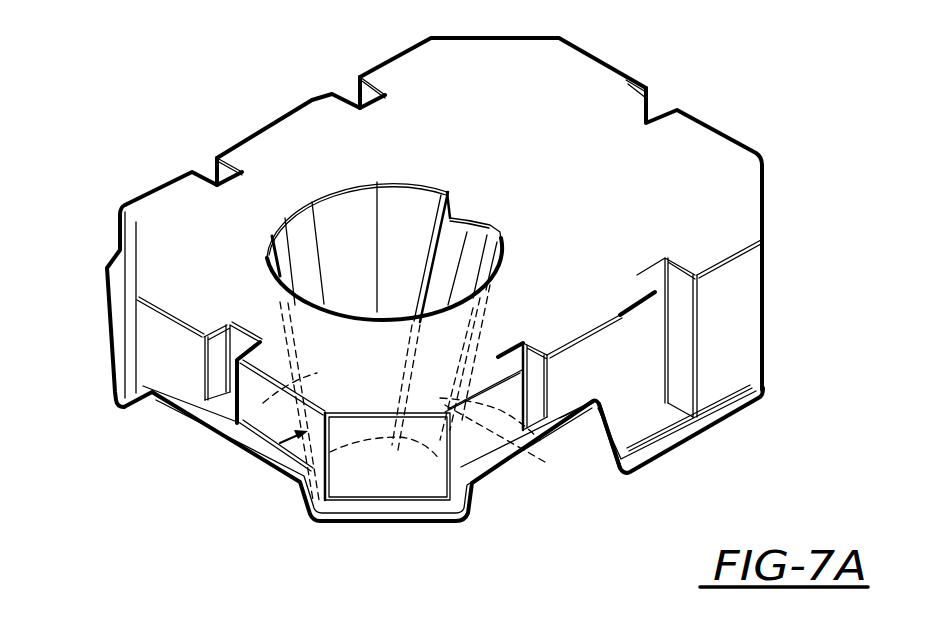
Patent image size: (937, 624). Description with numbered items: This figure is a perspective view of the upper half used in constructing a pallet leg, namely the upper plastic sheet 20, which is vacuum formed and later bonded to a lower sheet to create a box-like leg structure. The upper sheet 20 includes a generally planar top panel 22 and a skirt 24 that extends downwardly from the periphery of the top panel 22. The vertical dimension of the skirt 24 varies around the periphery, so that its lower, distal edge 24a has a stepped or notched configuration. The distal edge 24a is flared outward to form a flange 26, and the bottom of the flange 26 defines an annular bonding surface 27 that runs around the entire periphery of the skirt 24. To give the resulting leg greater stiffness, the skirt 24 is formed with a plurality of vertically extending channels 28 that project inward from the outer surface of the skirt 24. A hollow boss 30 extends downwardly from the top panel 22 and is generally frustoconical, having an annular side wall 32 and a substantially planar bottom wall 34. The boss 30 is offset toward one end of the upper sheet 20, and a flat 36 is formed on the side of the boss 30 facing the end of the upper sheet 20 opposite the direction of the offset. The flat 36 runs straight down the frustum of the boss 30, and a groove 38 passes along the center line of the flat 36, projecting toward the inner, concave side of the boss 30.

The upper plastic sheet 20 is at (254, 108).
The top panel 22 is at (582, 88).
The skirt 24 is at (152, 354).
The distal edge 24a is at (747, 377).
The flange 26 is at (753, 403).
The annular bonding surface 27 is at (603, 460).
The vertically extending channels 28 is at (213, 166).
The hollow boss 30 is at (254, 412).
The annular side wall 32 is at (235, 450).
The bottom wall 34 is at (372, 493).
The flat 36 is at (532, 430).
The groove 38 is at (490, 450).